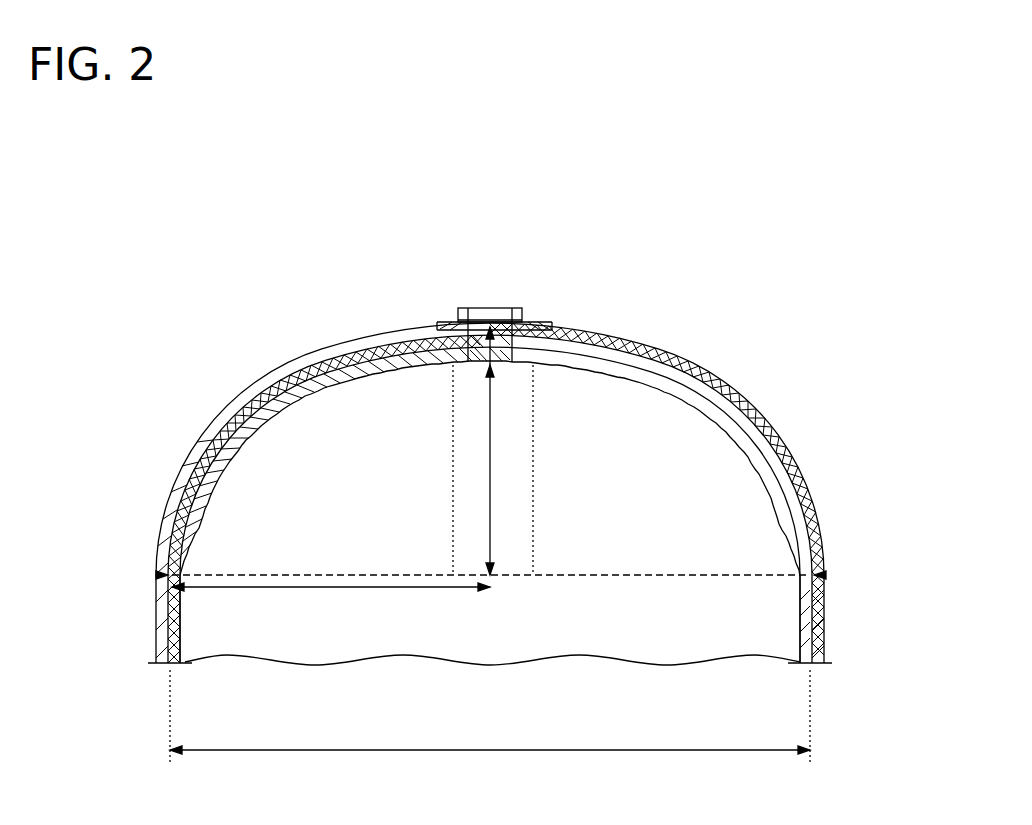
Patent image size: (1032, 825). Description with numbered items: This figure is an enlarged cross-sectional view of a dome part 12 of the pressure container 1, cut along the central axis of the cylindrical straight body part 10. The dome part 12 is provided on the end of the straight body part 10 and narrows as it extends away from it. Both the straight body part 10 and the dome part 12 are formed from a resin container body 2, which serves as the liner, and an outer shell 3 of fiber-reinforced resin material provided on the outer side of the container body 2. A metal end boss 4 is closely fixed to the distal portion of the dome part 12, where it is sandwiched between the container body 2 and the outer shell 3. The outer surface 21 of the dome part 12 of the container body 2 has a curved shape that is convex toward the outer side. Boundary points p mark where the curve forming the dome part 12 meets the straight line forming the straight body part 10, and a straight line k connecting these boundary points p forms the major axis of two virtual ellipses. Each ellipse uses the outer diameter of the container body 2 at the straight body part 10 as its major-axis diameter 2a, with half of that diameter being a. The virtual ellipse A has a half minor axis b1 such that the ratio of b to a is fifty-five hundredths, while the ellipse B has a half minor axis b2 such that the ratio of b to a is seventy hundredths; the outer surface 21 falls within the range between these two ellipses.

The pressure container 1 is at (632, 215).
The container body 2 is at (800, 597).
The outer shell 3 is at (155, 612).
The end boss 4 is at (523, 306).
The straight body part 10 is at (827, 620).
The dome part 12 is at (716, 368).
The outer surface 21 is at (363, 337).
The virtual ellipse A is at (748, 390).
The ellipse B is at (628, 329).
The boundary point p is at (156, 574).
The straight line k is at (656, 570).
The half major-axis diameter a is at (331, 603).
The half minor-axis diameter of ellipse A b1 is at (453, 470).
The half minor-axis diameter of ellipse B b2 is at (533, 470).
The diameter along the major axis 2a is at (490, 717).